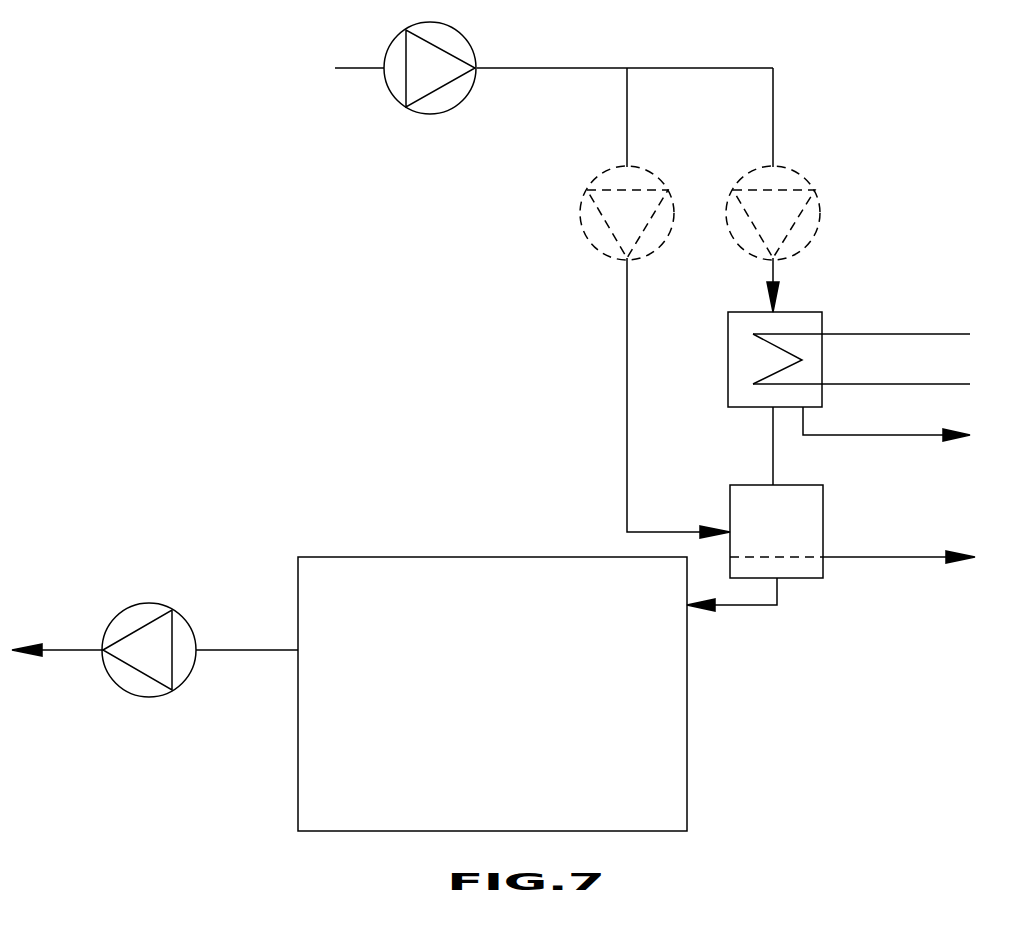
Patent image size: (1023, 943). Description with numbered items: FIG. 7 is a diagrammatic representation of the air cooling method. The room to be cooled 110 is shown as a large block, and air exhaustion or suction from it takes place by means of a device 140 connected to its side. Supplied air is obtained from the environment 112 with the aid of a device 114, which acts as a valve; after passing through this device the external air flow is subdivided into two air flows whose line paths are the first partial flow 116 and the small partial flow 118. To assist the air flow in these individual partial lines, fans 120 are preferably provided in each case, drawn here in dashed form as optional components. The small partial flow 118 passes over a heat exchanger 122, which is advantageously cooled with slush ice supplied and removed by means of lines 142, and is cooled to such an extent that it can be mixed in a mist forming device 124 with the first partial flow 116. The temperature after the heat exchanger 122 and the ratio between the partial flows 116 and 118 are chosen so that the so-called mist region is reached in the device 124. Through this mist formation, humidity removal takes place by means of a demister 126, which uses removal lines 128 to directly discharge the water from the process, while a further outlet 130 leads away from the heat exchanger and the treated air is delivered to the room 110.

The room to be cooled 110 is at (462, 557).
The environment 112 is at (347, 68).
The device 114 is at (437, 115).
The first partial flow 116 is at (627, 133).
The small partial flow 118 is at (773, 122).
The fans 120 is at (740, 240).
The heat exchanger 122 is at (812, 312).
The mist forming device 124 is at (823, 497).
The demister 126 is at (803, 557).
The removal lines 128 is at (898, 560).
The outlet line 130 is at (920, 437).
The device 140 is at (130, 604).
The lines 142 is at (942, 334).